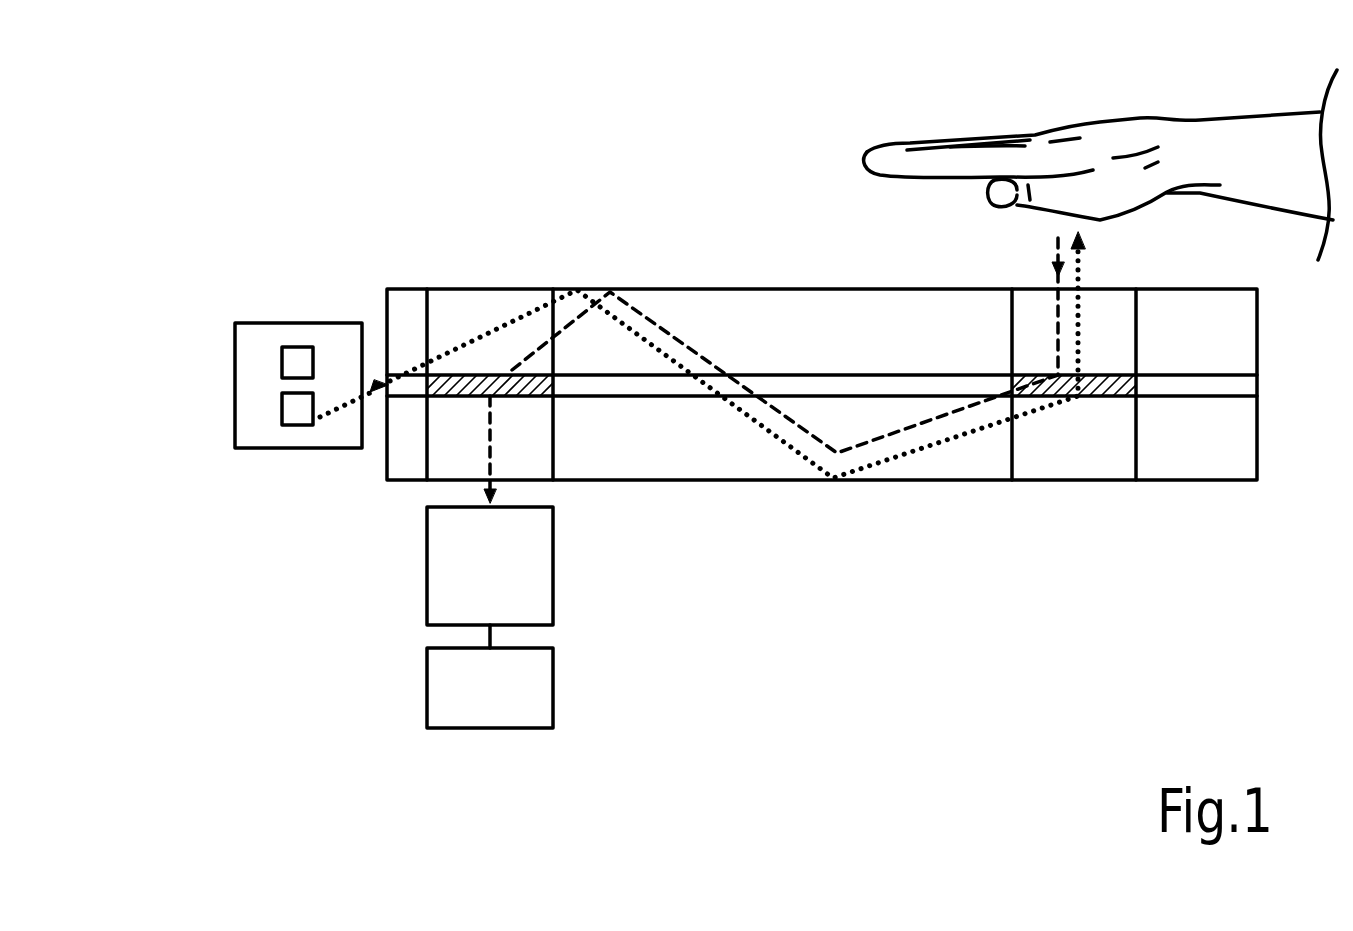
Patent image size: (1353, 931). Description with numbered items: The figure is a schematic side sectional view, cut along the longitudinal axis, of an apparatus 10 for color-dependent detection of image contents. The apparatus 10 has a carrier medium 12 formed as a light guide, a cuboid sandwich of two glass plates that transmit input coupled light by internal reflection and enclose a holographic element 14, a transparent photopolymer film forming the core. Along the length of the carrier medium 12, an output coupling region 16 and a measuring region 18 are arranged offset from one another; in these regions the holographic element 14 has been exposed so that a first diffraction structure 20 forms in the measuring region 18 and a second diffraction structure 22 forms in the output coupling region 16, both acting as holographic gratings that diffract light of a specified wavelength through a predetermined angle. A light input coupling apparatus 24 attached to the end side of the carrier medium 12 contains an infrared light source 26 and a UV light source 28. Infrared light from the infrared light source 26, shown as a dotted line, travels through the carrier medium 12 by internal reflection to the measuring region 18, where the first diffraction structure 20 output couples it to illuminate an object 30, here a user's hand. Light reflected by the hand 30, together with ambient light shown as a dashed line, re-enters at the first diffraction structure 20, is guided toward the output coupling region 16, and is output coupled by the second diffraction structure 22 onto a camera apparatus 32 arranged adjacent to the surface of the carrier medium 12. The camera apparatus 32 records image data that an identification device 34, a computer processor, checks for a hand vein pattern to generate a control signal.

The apparatus 10 is at (627, 156).
The carrier medium 12 is at (1264, 289).
The holographic element 14 is at (852, 385).
The output coupling region 16 is at (553, 285).
The measuring region 18 is at (1136, 487).
The first diffraction structure 20 is at (1113, 393).
The second diffraction structure 22 is at (480, 380).
The light input coupling apparatus 24 is at (235, 332).
The infrared light source 26 is at (282, 408).
The UV light source 28 is at (282, 361).
The object 30 is at (1083, 108).
The camera apparatus 32 is at (427, 590).
The identification device 34 is at (427, 684).